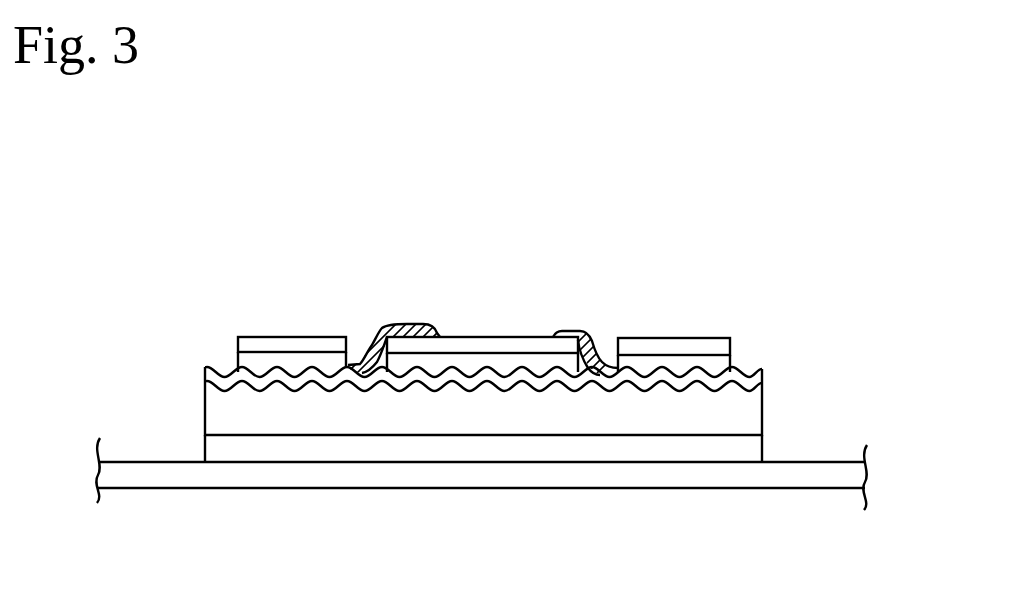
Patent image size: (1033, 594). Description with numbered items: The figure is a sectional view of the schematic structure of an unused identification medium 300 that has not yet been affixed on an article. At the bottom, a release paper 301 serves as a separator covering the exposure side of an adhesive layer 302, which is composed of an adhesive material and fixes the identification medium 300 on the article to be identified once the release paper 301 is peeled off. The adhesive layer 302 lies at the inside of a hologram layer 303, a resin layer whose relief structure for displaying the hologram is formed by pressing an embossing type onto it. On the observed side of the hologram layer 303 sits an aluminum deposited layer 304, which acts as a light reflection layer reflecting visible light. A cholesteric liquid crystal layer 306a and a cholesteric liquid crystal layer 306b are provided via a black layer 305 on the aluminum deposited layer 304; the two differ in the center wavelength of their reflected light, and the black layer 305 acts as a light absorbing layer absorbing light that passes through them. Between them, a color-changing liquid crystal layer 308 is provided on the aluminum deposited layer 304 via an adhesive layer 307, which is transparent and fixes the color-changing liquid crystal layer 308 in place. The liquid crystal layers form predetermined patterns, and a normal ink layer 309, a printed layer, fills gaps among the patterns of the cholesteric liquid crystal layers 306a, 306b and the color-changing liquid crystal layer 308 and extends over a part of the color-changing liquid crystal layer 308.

The identification medium 300 is at (439, 392).
The release paper 301 is at (157, 473).
The adhesive layer 302 is at (255, 450).
The hologram layer 303 is at (343, 425).
The aluminum deposited layer 304 is at (488, 387).
The black layer 305 is at (257, 362).
The cholesteric liquid crystal layer 306a is at (318, 345).
The cholesteric liquid crystal layer 306b is at (647, 347).
The adhesive layer 307 is at (448, 362).
The color-changing liquid crystal layer 308 is at (503, 348).
The normal ink layer 309 is at (410, 325).